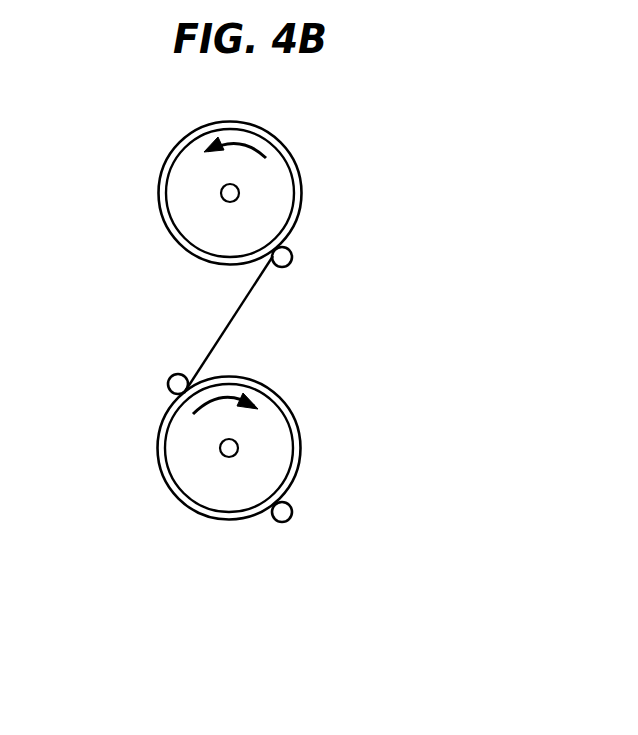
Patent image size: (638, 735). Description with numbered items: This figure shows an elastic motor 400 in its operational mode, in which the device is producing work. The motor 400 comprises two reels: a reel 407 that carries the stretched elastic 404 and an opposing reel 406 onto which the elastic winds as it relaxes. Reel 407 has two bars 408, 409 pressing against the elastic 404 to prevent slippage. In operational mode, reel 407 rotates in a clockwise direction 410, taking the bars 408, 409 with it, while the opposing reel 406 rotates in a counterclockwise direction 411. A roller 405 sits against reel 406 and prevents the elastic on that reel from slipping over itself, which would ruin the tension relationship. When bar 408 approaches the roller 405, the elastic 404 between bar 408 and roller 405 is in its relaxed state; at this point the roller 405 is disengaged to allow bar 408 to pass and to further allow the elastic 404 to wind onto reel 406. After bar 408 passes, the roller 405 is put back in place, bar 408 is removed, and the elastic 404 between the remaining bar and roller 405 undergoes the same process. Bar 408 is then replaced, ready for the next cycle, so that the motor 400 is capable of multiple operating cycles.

The motor 400 is at (447, 92).
The elastic 404 is at (190, 505).
The roller 405 is at (291, 261).
The reel 406 is at (205, 232).
The reel 407 is at (301, 444).
The bar 408 is at (168, 386).
The bar 409 is at (292, 513).
The clockwise direction 410 is at (225, 417).
The counterclockwise direction 411 is at (235, 161).